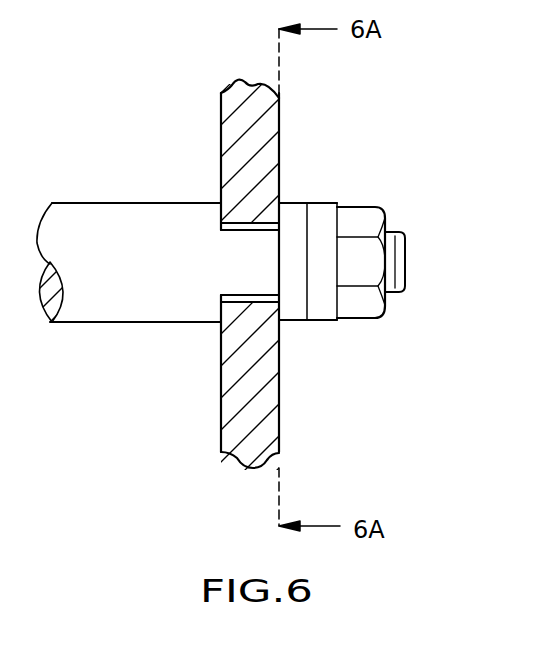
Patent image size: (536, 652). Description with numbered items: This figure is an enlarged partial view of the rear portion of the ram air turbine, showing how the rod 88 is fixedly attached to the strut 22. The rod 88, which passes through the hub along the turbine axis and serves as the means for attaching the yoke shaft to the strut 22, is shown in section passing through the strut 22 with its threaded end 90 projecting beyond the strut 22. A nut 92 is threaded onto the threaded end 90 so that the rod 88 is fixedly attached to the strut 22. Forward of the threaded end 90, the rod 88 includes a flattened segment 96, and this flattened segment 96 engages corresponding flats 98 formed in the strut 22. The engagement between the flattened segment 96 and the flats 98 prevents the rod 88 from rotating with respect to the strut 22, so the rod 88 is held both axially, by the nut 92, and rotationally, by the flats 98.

The strut 22 is at (230, 112).
The rod 88 is at (149, 210).
The threaded end 90 is at (386, 163).
The nut 92 is at (380, 207).
The flattened segment 96 is at (258, 223).
The flats 98 is at (272, 298).